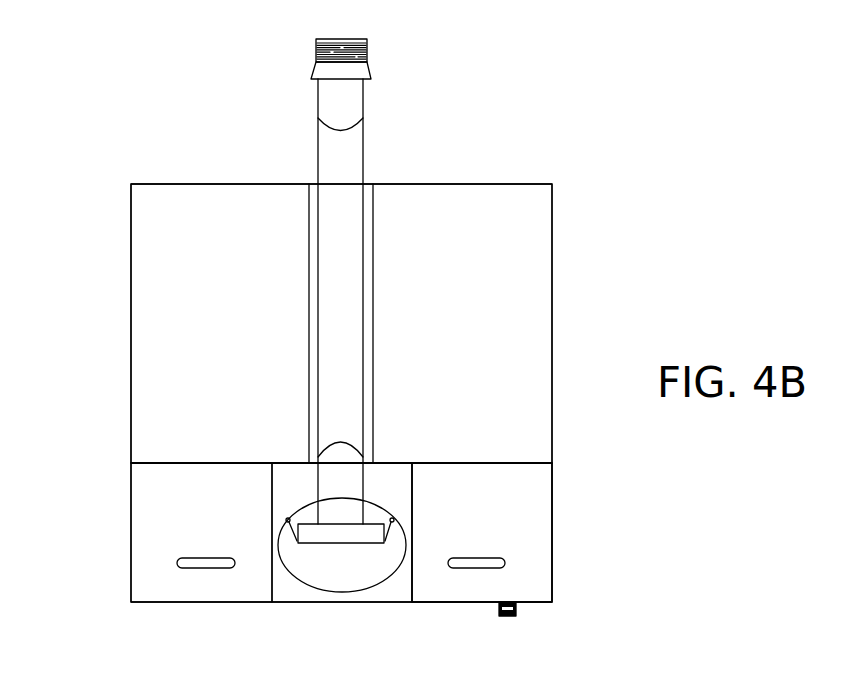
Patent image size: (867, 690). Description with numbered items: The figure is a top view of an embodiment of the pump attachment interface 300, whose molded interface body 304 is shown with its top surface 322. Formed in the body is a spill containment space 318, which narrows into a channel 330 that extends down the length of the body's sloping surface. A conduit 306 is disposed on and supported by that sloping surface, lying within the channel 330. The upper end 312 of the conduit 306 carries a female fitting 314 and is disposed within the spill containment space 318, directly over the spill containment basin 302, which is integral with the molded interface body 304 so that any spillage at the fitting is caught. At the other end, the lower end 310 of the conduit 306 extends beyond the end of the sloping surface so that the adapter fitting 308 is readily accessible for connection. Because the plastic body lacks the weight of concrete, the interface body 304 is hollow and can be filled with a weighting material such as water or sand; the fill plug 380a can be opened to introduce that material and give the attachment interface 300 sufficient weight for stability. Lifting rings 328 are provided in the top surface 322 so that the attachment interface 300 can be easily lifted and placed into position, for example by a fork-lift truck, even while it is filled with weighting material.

The pump attachment interface 300 is at (117, 142).
The spill containment basin 302 is at (338, 568).
The interface body 304 is at (552, 324).
The conduit 306 is at (318, 160).
The adapter fitting 308 is at (366, 46).
The lower end 310 is at (290, 72).
The upper end 312 is at (427, 497).
The female fitting 314 is at (310, 544).
The spill containment space 318 is at (293, 488).
The top surface 322 is at (445, 477).
The lifting rings 328 is at (187, 568).
The channel 330 is at (313, 364).
The fill plug 380a is at (516, 614).